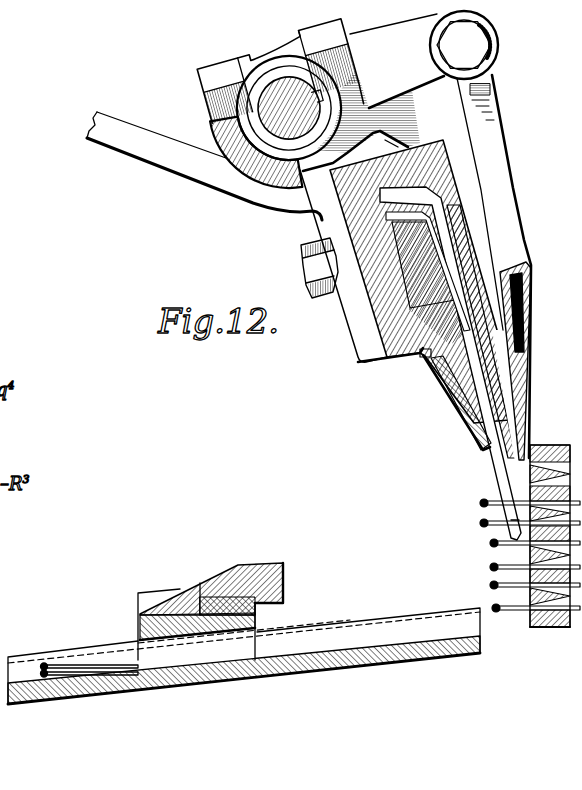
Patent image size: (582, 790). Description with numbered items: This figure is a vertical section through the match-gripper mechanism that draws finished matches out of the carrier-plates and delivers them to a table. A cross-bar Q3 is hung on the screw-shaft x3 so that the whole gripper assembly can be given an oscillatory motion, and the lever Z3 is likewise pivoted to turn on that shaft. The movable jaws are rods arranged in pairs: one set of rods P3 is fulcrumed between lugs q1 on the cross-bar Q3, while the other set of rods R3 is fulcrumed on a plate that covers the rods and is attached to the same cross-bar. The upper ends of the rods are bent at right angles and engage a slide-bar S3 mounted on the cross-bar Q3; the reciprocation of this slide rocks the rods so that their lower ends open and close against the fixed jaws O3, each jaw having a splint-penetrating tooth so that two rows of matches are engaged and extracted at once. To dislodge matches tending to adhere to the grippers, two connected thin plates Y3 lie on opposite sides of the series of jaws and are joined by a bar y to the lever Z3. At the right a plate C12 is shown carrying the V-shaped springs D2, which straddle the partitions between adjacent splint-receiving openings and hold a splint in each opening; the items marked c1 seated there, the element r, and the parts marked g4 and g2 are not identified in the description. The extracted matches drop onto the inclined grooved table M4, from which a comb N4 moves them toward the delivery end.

The screw-shaft x3 is at (279, 78).
The lever Z3 is at (265, 117).
The rivet / pin r is at (392, 146).
The bar y is at (507, 197).
The rods R3 is at (468, 252).
The thin plate g4 is at (482, 268).
The blade g2 is at (490, 304).
The slide-bar S3 is at (419, 281).
The cross-bar Q3 is at (381, 338).
The lugs q1 is at (421, 357).
The rods P3 is at (462, 392).
The thin plates Y3 is at (520, 393).
The needle bed C12 is at (551, 525).
The needles c1 is at (532, 551).
The V-shaped spring D2 is at (546, 618).
The fixed jaws O3 is at (507, 484).
The comb N4 is at (198, 593).
The table M4 is at (299, 672).